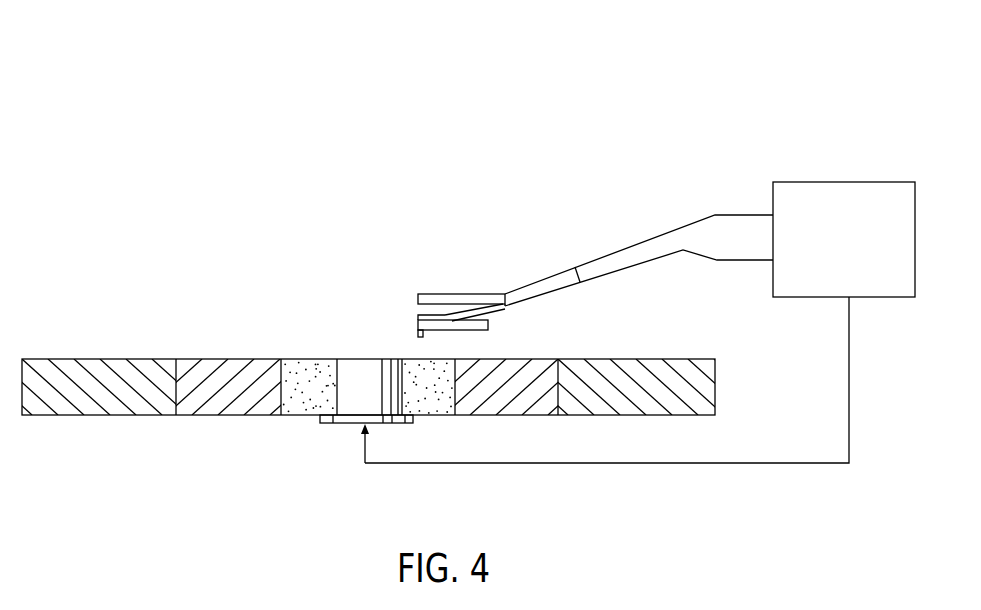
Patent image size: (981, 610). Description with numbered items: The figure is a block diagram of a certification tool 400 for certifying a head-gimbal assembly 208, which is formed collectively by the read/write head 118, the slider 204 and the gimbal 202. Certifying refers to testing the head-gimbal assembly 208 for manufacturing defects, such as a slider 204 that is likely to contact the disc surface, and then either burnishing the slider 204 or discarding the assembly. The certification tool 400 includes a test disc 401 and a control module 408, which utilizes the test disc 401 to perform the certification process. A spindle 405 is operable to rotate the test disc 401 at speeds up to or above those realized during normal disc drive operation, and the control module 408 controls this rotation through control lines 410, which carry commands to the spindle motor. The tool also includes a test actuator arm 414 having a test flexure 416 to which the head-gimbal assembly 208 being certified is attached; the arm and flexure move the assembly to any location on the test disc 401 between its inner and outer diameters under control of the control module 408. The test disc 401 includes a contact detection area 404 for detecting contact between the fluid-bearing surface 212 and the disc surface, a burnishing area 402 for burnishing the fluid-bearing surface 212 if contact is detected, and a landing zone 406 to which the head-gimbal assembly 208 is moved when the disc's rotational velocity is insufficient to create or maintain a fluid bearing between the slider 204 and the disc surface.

The certification tool 400 is at (865, 70).
The test disc 401 is at (98, 423).
The burnishing area 402 is at (105, 358).
The contact detection area 404 is at (222, 358).
The landing zone 406 is at (302, 417).
The spindle 405 is at (356, 424).
The control module 408 is at (838, 182).
The control lines 410 is at (633, 463).
The test actuator arm 414 is at (660, 236).
The test flexure 416 is at (550, 277).
The head-gimbal assembly 208 is at (410, 288).
The gimbal 202 is at (455, 294).
The slider 204 is at (418, 317).
The fluid-bearing surface 212 is at (448, 330).
The read/write head 118 is at (417, 337).